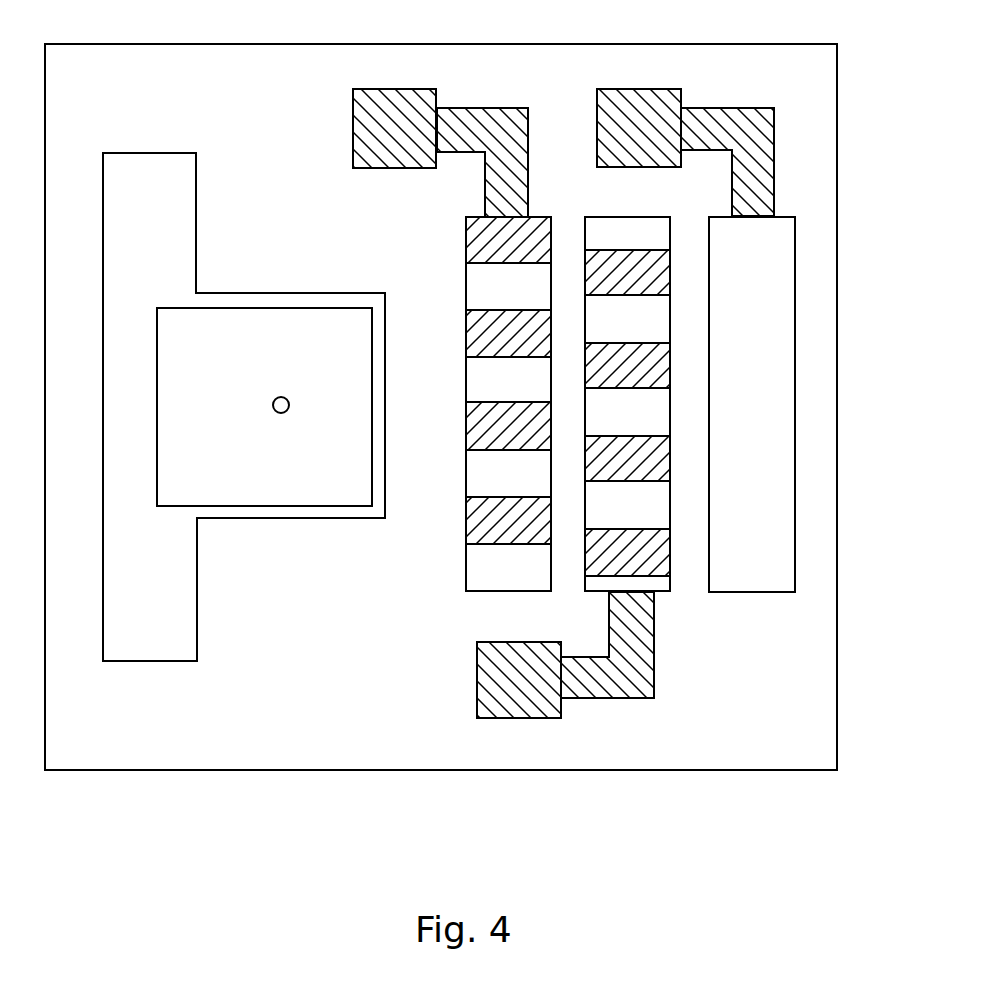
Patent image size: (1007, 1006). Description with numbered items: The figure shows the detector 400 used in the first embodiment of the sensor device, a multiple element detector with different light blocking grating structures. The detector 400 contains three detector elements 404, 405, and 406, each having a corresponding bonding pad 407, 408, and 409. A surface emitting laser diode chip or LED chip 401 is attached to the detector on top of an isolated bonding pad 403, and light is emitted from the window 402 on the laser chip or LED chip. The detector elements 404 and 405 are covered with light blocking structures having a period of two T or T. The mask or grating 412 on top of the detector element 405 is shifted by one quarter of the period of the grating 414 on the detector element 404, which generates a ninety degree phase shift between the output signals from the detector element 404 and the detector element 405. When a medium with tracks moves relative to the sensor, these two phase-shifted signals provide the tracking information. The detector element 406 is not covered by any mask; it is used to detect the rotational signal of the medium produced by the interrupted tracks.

The detector 400 is at (561, 43).
The laser diode chip or LED chip 401 is at (251, 327).
The window 402 is at (283, 413).
The isolated bonding pad 403 is at (148, 153).
The detector element 404 is at (500, 592).
The detector element 405 is at (623, 217).
The detector element 406 is at (785, 283).
The bonding pad 407 is at (393, 89).
The bonding pad 408 is at (518, 720).
The bonding pad 409 is at (740, 108).
The mask or grating 412 is at (670, 272).
The grating 414 is at (466, 240).